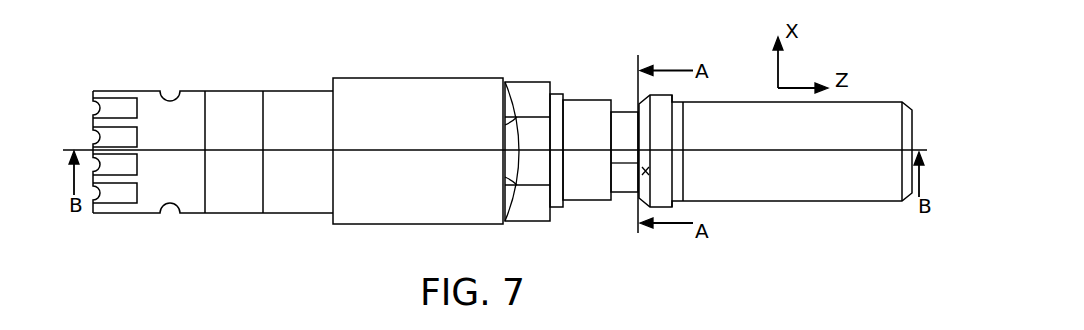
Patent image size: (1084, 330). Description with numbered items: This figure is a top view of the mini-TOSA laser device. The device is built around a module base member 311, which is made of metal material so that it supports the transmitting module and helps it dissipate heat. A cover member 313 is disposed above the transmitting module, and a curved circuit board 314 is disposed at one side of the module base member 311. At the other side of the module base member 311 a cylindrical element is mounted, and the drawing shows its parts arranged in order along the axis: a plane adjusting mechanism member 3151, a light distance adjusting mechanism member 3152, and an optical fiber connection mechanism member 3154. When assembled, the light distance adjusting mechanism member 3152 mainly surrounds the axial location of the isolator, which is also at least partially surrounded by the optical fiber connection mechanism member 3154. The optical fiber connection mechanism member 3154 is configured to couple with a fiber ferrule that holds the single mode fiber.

The curved circuit board 314 is at (150, 100).
The cover member 313 is at (381, 87).
The module base member 311 is at (525, 93).
The plane adjusting mechanism member 3151 is at (583, 120).
The light distance adjusting mechanism member 3152 is at (628, 182).
The optical fiber connection mechanism member 3154 is at (812, 182).